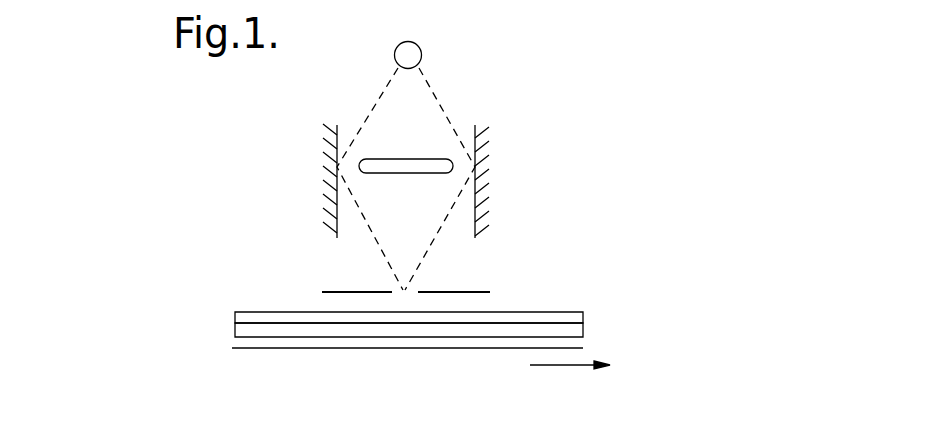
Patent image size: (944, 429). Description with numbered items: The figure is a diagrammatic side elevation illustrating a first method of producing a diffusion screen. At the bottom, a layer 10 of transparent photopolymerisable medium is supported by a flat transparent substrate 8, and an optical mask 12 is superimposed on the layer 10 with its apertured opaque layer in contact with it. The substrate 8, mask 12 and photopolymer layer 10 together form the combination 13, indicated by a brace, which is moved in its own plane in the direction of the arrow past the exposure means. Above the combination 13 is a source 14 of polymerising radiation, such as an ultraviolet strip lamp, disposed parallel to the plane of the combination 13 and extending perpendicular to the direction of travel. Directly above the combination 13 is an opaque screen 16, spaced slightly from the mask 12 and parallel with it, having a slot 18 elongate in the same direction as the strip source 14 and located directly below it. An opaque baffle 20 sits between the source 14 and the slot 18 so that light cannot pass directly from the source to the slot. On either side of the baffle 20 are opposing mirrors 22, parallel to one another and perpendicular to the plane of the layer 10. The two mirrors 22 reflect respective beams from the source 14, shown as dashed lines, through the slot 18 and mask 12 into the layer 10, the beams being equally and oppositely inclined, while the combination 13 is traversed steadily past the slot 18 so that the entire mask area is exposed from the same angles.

The transparent substrate 8 is at (361, 349).
The photopolymerisable layer 10 is at (455, 326).
The optical mask 12 is at (538, 313).
The combination 13 is at (203, 305).
The source of polymerising radiation 14 is at (394, 49).
The opaque screen 16 is at (453, 290).
The slot 18 is at (398, 287).
The opaque baffle 20 is at (421, 159).
The mirrors 22 is at (335, 180).